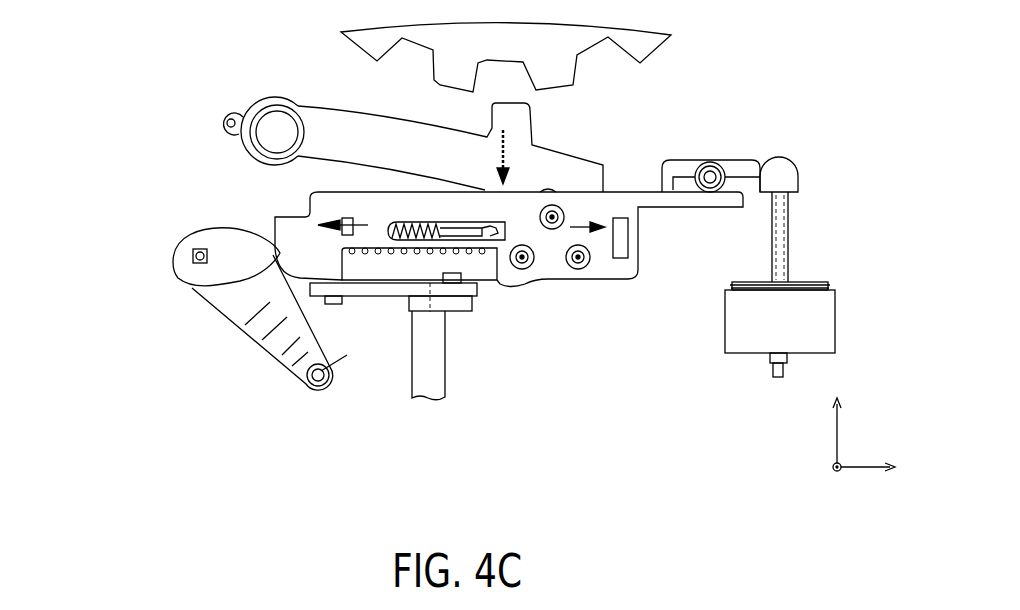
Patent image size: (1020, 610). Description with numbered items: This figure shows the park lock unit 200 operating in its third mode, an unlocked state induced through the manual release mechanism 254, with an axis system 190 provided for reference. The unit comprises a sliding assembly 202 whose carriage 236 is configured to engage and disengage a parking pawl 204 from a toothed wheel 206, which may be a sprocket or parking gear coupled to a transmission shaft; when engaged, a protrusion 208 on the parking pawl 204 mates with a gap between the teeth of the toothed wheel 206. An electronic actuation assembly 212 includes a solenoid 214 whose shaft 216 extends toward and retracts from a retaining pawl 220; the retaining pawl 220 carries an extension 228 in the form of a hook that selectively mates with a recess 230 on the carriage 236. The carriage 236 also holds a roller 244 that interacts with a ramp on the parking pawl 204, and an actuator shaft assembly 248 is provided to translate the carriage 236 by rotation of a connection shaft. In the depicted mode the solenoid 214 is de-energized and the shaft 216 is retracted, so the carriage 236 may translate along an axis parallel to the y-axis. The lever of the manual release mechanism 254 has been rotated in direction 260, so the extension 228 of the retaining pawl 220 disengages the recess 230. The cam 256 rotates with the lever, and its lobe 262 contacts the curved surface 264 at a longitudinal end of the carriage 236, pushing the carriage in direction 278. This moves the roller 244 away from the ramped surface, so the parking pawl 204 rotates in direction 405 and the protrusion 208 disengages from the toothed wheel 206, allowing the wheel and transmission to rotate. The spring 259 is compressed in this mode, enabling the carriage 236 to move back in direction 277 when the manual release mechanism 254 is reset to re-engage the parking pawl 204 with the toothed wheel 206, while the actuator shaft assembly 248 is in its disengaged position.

The axis system 190 is at (870, 430).
The park lock unit 200 is at (80, 117).
The sliding assembly 202 is at (270, 195).
The parking pawl 204 is at (370, 104).
The toothed wheel 206 is at (675, 59).
The protrusion 208 is at (520, 128).
The electronic actuation assembly 212 is at (840, 178).
The solenoid 214 is at (850, 312).
The shaft 216 is at (770, 248).
The retaining pawl 220 is at (720, 146).
The extension 228 is at (664, 182).
The recess 230 is at (670, 200).
The carriage 236 is at (622, 262).
The roller 244 is at (552, 222).
The actuator shaft assembly 248 is at (468, 387).
The manual release mechanism 254 is at (120, 261).
The cam 256 is at (226, 221).
The spring 259 is at (404, 252).
The direction 260 is at (344, 362).
The lobe 262 is at (279, 250).
The curved surface 264 is at (258, 283).
The direction 277 is at (357, 222).
The direction 278 is at (588, 232).
The direction 405 is at (503, 143).